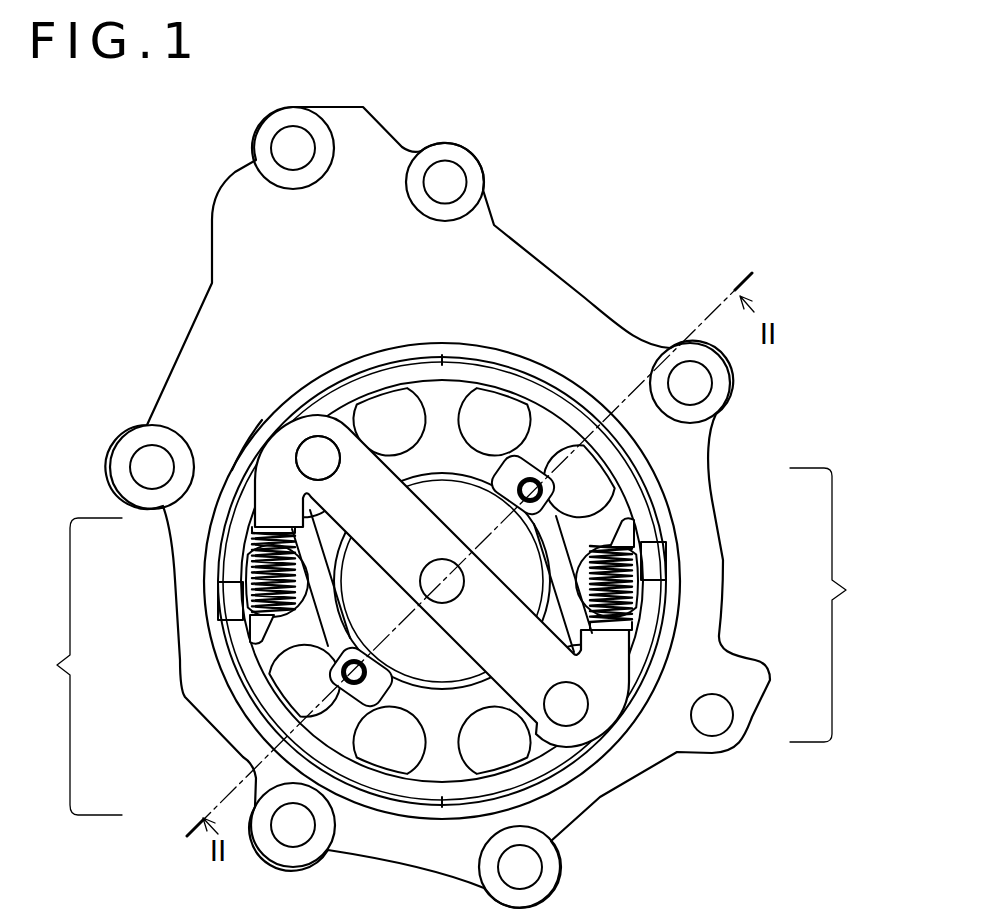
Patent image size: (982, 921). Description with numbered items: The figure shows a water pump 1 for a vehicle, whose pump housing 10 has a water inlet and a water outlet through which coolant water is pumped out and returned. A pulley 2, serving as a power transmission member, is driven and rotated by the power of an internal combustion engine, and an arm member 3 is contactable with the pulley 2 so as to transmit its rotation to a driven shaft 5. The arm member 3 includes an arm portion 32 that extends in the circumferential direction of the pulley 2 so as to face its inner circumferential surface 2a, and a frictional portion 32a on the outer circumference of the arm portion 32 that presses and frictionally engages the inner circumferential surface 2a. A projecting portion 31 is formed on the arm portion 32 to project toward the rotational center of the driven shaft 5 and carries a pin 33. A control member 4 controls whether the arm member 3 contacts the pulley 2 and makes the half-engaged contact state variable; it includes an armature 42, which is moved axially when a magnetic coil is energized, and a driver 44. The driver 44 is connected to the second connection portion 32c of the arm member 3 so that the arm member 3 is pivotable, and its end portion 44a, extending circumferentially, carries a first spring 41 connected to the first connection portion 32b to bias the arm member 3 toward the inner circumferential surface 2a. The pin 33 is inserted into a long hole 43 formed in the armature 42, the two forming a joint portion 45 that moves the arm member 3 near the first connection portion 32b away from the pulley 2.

The water pump 1 is at (533, 182).
The pulley 2 is at (230, 462).
The inner circumferential surface 2a is at (268, 423).
The arm member 3 is at (76, 666).
The control member 4 is at (832, 605).
The driven shaft 5 is at (437, 568).
The pump housing 10 is at (262, 237).
The projecting portion 31 is at (342, 675).
The arm portion 32 is at (310, 690).
The frictional portion 32a is at (300, 662).
The first connection portion 32b is at (258, 616).
The second connection portion 32c is at (310, 455).
The pin 33 is at (255, 572).
The first spring 41 is at (648, 588).
The armature 42 is at (612, 627).
The long hole 43 is at (612, 544).
The driver 44 is at (590, 706).
The end portion 44a is at (592, 660).
The joint portion 45 is at (573, 516).